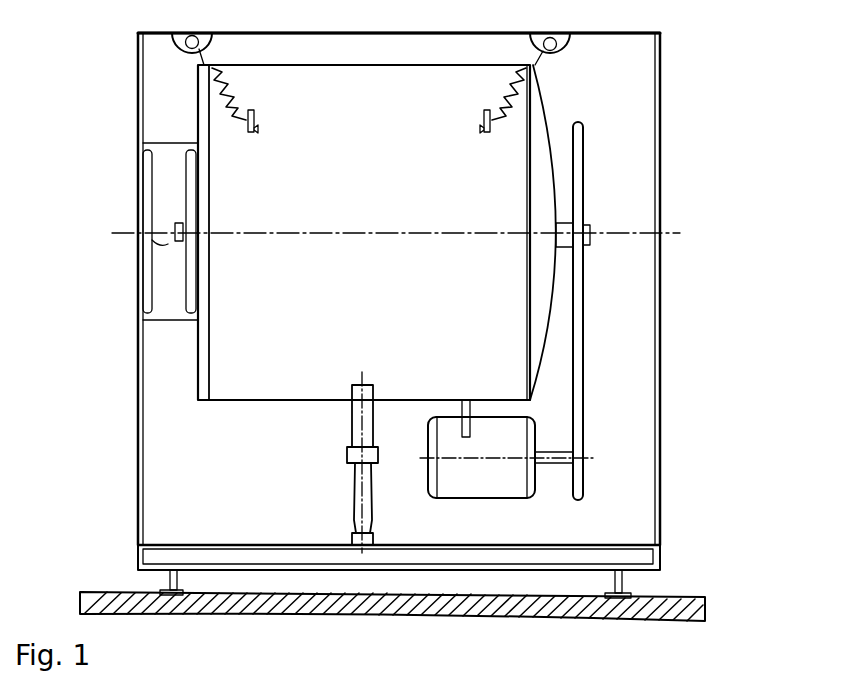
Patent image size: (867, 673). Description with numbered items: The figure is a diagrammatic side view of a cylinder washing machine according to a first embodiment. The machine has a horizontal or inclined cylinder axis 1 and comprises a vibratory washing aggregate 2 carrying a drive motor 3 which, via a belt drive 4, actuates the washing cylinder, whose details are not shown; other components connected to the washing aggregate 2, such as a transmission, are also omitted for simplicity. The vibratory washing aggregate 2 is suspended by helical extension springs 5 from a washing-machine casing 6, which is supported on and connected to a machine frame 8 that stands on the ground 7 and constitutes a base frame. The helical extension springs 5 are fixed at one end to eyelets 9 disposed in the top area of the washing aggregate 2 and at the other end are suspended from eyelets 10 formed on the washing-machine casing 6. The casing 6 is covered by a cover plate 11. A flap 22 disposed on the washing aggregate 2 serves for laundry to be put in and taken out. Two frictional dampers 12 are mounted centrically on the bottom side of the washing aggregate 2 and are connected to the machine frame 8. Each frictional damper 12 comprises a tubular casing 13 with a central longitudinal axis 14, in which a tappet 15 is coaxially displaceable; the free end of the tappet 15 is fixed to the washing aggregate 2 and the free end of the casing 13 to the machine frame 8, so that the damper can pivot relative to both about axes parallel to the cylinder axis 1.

The cylinder axis 1 is at (170, 243).
The vibratory washing aggregate 2 is at (551, 140).
The drive motor 3 is at (515, 478).
The belt drive 4 is at (583, 377).
The helical extension springs 5 is at (215, 97).
The washing-machine casing 6 is at (137, 342).
The ground 7 is at (113, 592).
The machine frame 8 is at (140, 551).
The eyelets 9 is at (248, 124).
The eyelets 10 is at (186, 42).
The cover plate 11 is at (222, 33).
The frictional damper 12 is at (199, 462).
The tubular casing 13 is at (355, 507).
The central longitudinal axis 14 is at (347, 435).
The tappet 15 is at (352, 411).
The flap 22 is at (142, 188).